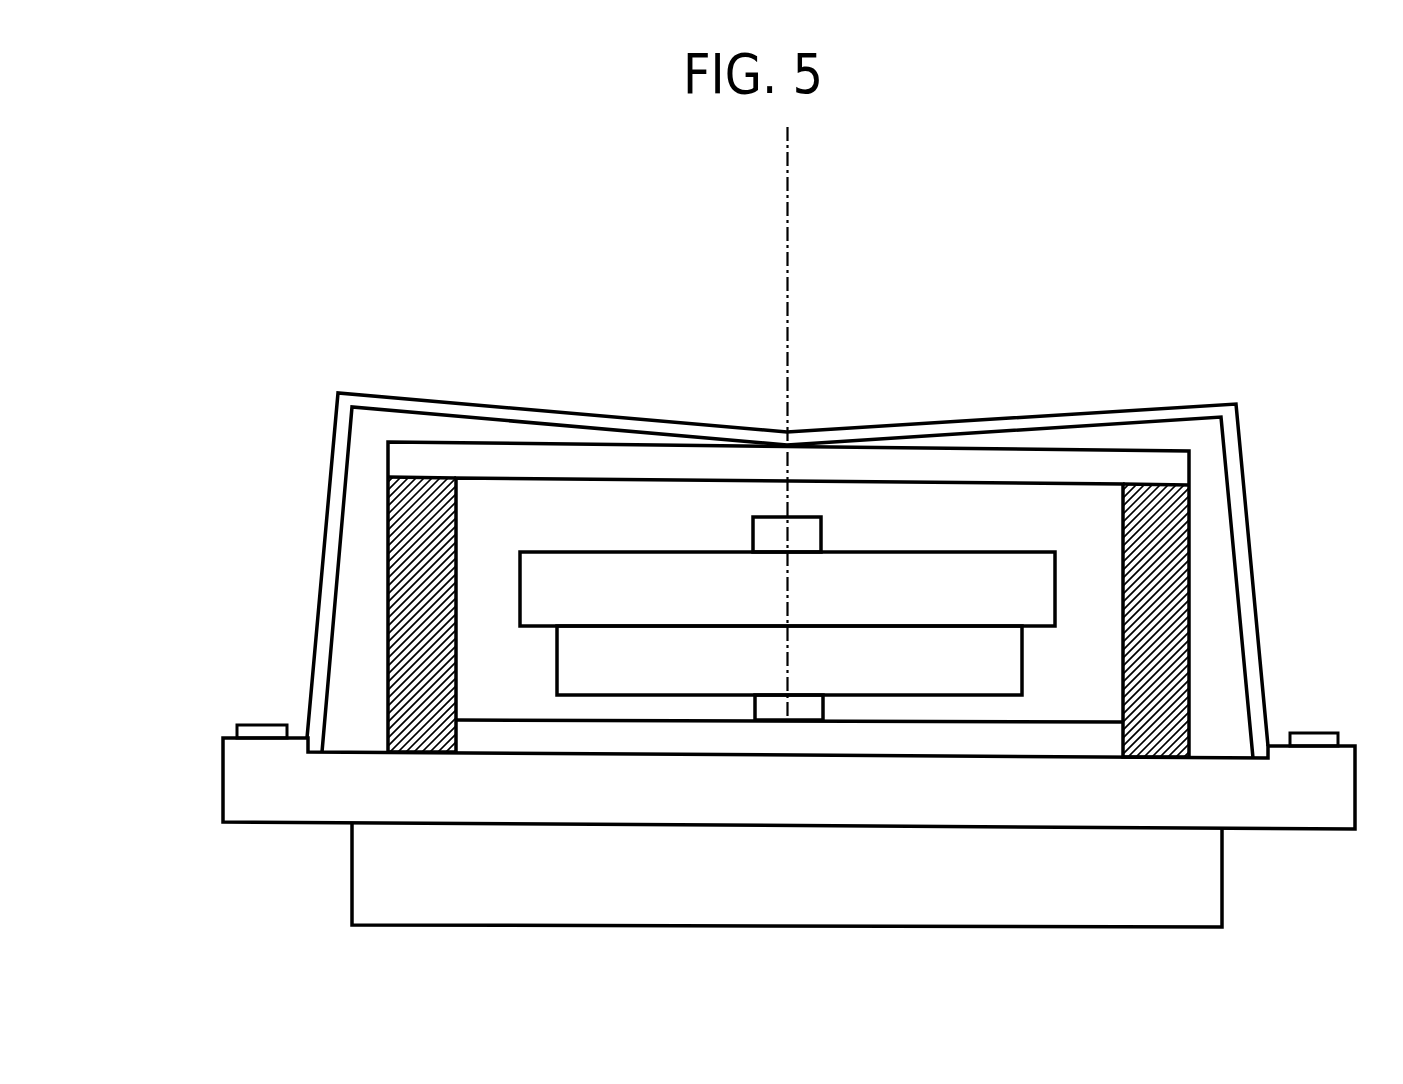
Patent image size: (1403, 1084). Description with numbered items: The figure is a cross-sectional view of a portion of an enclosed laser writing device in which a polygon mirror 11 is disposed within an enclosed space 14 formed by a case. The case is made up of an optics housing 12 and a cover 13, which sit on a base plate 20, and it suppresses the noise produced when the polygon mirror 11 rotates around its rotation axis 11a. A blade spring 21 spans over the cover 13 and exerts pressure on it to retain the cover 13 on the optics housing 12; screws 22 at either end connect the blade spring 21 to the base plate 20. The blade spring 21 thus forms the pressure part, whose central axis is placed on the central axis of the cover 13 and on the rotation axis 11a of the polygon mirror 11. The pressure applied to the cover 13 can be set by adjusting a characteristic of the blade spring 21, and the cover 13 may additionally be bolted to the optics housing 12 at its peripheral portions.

The polygon mirror 11 is at (616, 561).
The rotation axis 11a is at (788, 173).
The optics housing 12 is at (1119, 622).
The cover 13 is at (550, 471).
The enclosed space 14 is at (1021, 498).
The base plate 20 is at (238, 793).
The blade spring 21 is at (883, 424).
The screws 22 is at (261, 733).